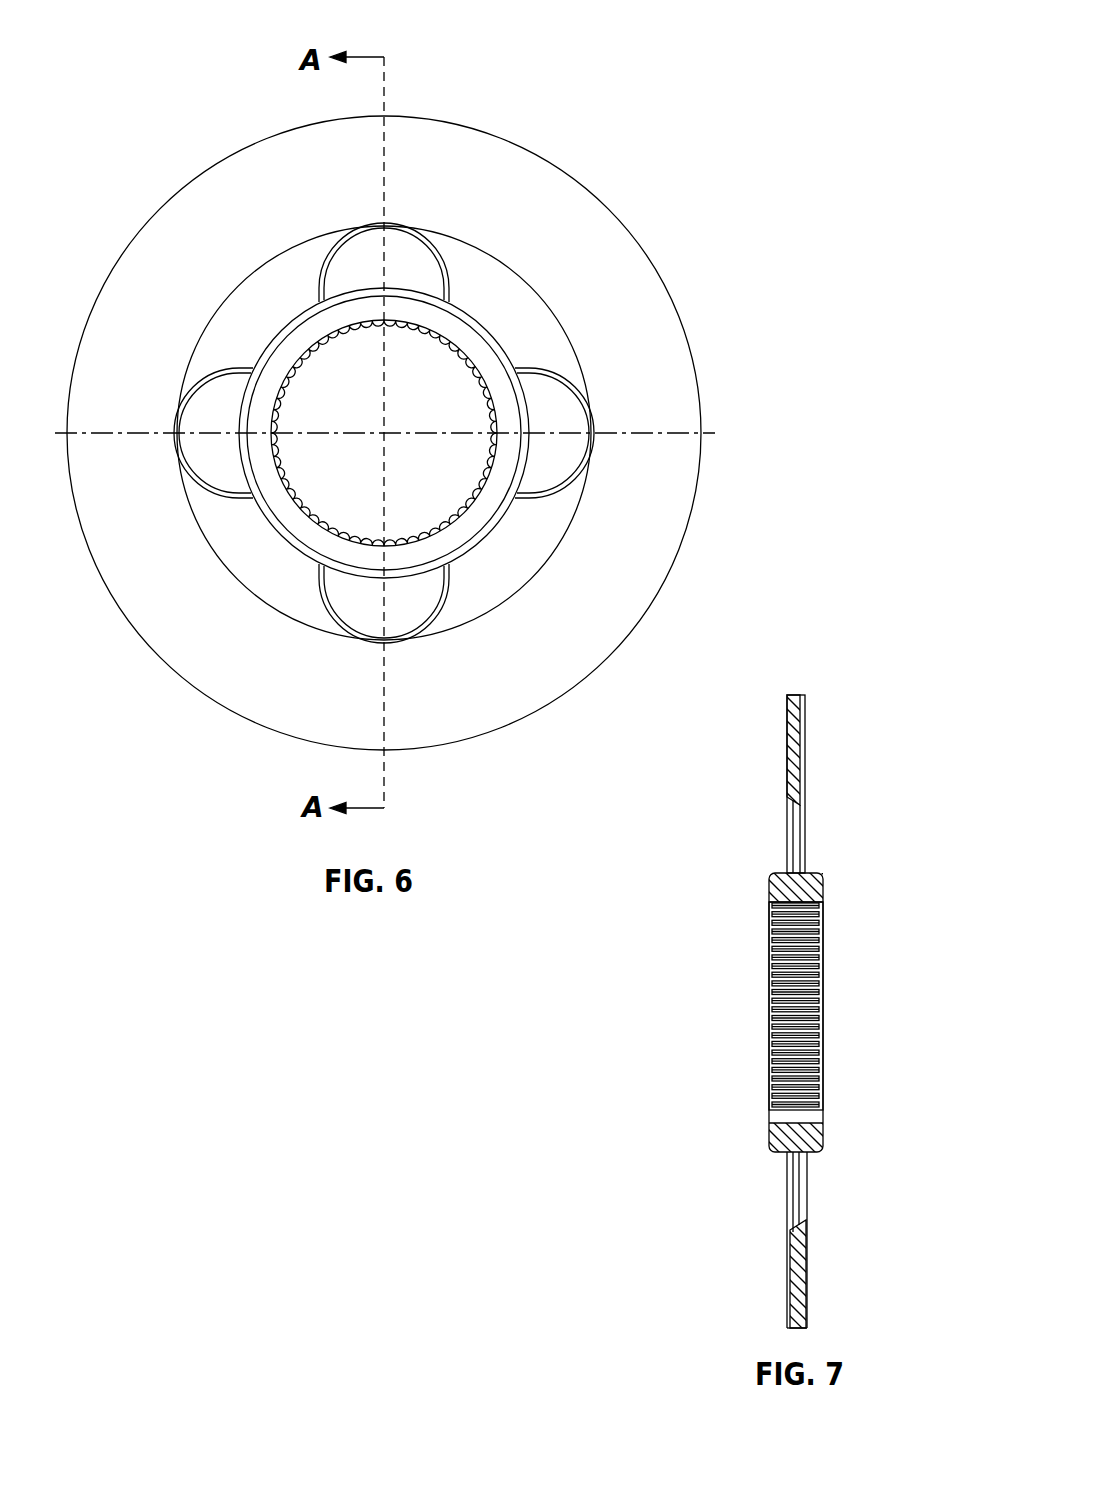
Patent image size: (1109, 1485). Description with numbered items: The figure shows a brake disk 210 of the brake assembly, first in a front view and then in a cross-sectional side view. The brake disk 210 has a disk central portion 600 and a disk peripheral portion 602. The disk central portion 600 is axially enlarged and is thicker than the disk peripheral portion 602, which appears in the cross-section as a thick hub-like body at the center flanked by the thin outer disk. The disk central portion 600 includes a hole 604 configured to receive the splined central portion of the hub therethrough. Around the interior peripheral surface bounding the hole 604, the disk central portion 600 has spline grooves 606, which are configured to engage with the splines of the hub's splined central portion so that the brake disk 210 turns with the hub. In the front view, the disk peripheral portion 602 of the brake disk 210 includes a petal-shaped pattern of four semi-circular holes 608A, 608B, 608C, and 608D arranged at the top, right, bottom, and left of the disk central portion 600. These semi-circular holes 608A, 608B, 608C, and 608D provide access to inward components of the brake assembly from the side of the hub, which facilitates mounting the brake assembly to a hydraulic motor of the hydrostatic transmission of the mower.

In FIG. 6, the brake disk 210 is at (162, 162).
In FIG. 7, the brake disk 210 is at (785, 689).
In FIG. 6, the disk central portion 600 is at (301, 312).
In FIG. 7, the disk central portion 600 is at (775, 870).
In FIG. 6, the disk peripheral portion 602 is at (162, 253).
In FIG. 7, the disk peripheral portion 602 is at (812, 742).
In FIG. 6, the hole 604 is at (440, 374).
In FIG. 7, the hole 604 is at (768, 1032).
In FIG. 6, the spline grooves 606 is at (285, 468).
In FIG. 7, the spline grooves 606 is at (770, 1093).
In FIG. 6, the semi-circular hole 608A is at (402, 271).
In FIG. 7, the semi-circular hole 608A is at (812, 832).
In FIG. 6, the semi-circular hole 608B is at (562, 412).
In FIG. 6, the semi-circular hole 608C is at (370, 612).
In FIG. 6, the semi-circular hole 608D is at (208, 418).